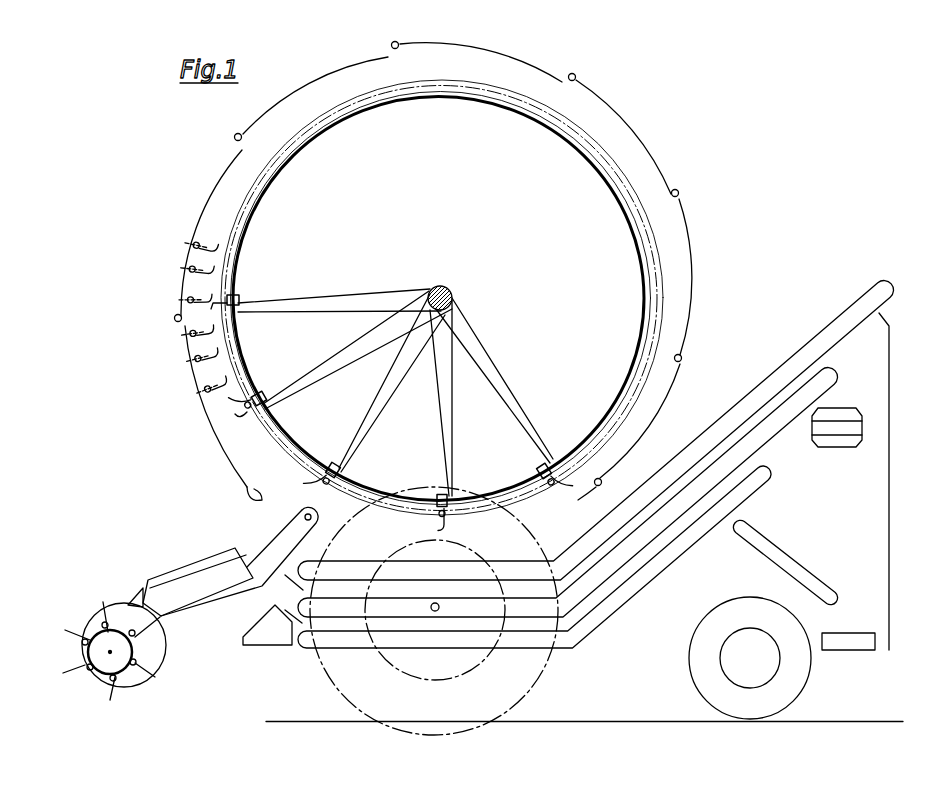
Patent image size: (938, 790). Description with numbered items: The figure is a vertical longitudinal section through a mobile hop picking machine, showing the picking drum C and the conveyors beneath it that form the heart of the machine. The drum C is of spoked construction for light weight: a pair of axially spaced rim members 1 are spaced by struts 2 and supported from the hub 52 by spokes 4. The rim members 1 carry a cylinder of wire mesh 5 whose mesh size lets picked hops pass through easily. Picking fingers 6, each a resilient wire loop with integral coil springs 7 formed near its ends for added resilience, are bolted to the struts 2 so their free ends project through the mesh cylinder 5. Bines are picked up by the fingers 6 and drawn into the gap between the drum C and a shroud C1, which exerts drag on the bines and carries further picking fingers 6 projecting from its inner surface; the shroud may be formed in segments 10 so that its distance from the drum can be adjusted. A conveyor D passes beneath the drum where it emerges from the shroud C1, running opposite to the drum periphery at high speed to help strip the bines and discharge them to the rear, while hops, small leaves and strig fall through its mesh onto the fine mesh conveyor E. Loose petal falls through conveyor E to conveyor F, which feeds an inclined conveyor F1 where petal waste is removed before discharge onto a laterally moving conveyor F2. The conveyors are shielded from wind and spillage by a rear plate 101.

The rim members 1 is at (309, 452).
The struts 2 is at (266, 401).
The spokes 4 is at (504, 380).
The cylinder of wire mesh 5 is at (258, 380).
The picking fingers 6 is at (222, 402).
The coil springs 7 is at (240, 297).
The segments 10 is at (210, 198).
The hub 52 is at (449, 290).
The rear plate 101 is at (890, 458).
The picking drum C is at (648, 187).
The shroud C1 is at (547, 59).
The counterweight CT is at (843, 409).
The conveyor D is at (769, 382).
The conveyor E is at (784, 419).
The conveyor F is at (769, 474).
The inclined conveyor F1 is at (792, 557).
The laterally moving conveyor F2 is at (850, 635).